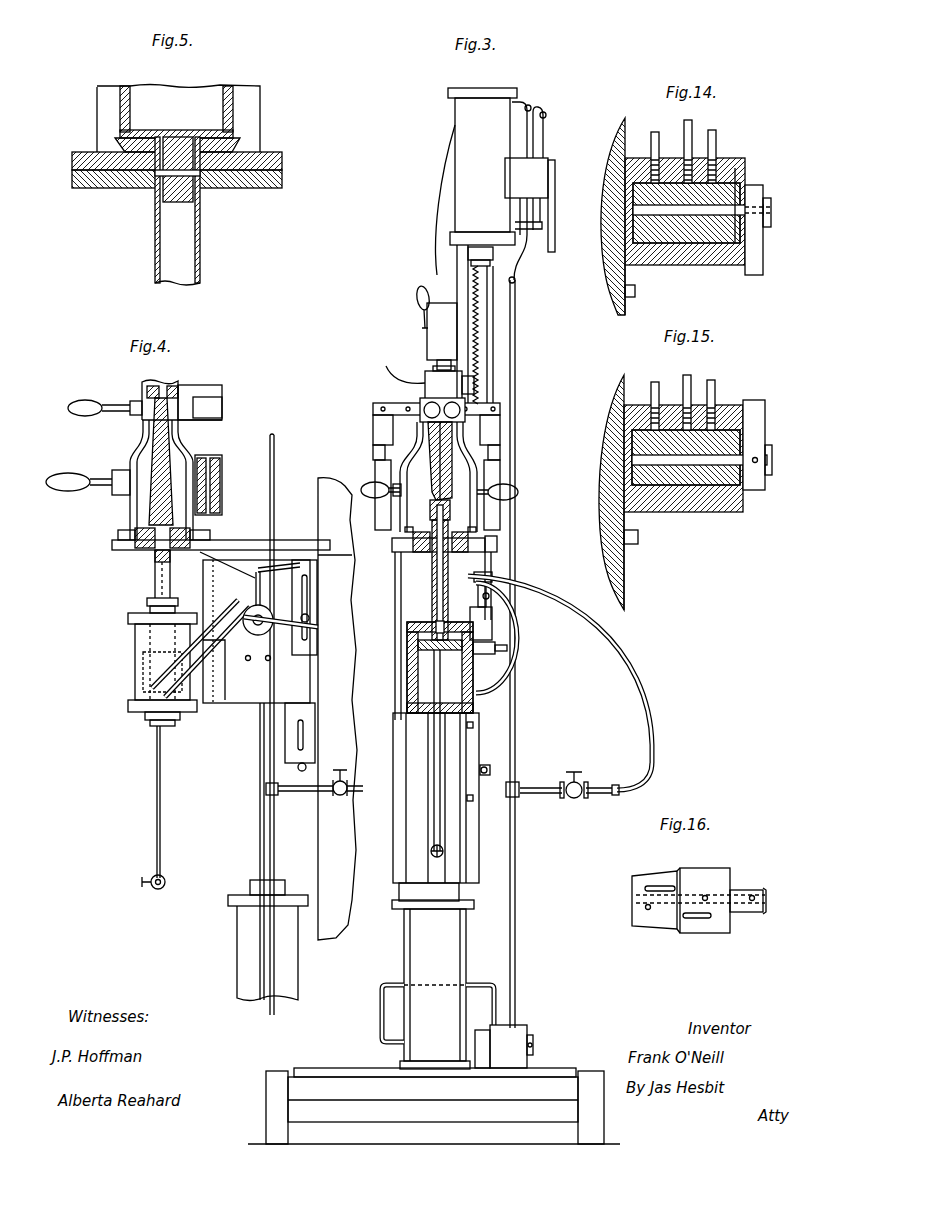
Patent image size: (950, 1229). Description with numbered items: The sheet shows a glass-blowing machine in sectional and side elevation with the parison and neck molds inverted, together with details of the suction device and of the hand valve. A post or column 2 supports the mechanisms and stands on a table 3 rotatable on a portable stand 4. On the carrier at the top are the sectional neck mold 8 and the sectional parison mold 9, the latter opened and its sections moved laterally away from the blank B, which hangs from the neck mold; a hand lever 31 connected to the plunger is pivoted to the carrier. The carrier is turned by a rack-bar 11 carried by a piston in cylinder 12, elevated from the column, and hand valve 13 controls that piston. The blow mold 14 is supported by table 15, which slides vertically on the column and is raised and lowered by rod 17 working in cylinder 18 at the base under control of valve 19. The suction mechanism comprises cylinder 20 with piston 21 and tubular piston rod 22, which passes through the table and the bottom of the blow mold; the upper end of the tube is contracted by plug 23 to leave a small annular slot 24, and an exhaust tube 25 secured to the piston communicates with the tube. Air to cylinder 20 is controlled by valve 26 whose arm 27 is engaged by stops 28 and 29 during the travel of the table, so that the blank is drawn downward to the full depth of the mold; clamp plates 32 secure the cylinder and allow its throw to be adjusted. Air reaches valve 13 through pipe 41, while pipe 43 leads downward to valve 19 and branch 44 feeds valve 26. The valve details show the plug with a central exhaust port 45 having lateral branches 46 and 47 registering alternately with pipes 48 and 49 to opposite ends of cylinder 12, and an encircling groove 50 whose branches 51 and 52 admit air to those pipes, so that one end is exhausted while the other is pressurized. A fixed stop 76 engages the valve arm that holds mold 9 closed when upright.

In FIG. 3, the post or column 2 is at (345, 710).
In FIG. 3, the table 3 is at (335, 1068).
In FIG. 3, the portable stand 4 is at (434, 1107).
In FIG. 4, the sectional neck mold 8 is at (136, 400).
In FIG. 3, the sectional neck mold 8 is at (435, 405).
In FIG. 3, the sectional blank or parison mold 9 is at (376, 508).
In FIG. 3, the rack-bar 11 is at (480, 332).
In FIG. 3, the cylinder 12 is at (457, 108).
In FIG. 3, the hand valve 13 is at (548, 178).
In FIG. 16, the hand valve 13 is at (632, 915).
In FIG. 5, the blow mold 14 is at (250, 107).
In FIG. 4, the blow mold 14 is at (133, 510).
In FIG. 3, the blow mold 14 is at (412, 540).
In FIG. 3, the table 15 is at (488, 548).
In FIG. 14, the table 15 is at (748, 190).
In FIG. 4, the rod 17 is at (260, 832).
In FIG. 3, the rod 17 is at (430, 828).
In FIG. 4, the cylinder 18 is at (237, 953).
In FIG. 3, the cylinder 18 is at (438, 976).
In FIG. 3, the valve 19 is at (520, 1031).
In FIG. 4, the cylinder 20 is at (135, 652).
In FIG. 3, the cylinder 20 is at (408, 682).
In FIG. 4, the piston 21 is at (145, 672).
In FIG. 3, the piston 21 is at (418, 645).
In FIG. 5, the tubular piston rod 22 is at (156, 250).
In FIG. 4, the tubular piston rod 22 is at (155, 584).
In FIG. 3, the tubular piston rod 22 is at (432, 600).
In FIG. 5, the plug 23 is at (160, 201).
In FIG. 5, the annular slot 24 is at (168, 137).
In FIG. 4, the suction or exhaust tube 25 is at (155, 798).
In FIG. 3, the suction or exhaust tube 25 is at (433, 748).
In FIG. 4, the valve 26 is at (250, 629).
In FIG. 3, the valve 26 is at (492, 612).
In FIG. 4, the arm 27 is at (318, 632).
In FIG. 3, the arm 27 is at (495, 655).
In FIG. 4, the stop 28 is at (306, 764).
In FIG. 3, the stop 28 is at (490, 768).
In FIG. 4, the stop 29 is at (309, 618).
In FIG. 3, the hand lever 31 is at (418, 302).
In FIG. 4, the clamp plates 32 is at (213, 683).
In FIG. 14, the pipe 41 is at (687, 128).
In FIG. 15, the pipe 41 is at (687, 382).
In FIG. 4, the pipe 43 is at (270, 462).
In FIG. 3, the pipe 43 is at (517, 372).
In FIG. 3, the branch 44 is at (603, 797).
In FIG. 14, the central exhaust port 45 is at (726, 262).
In FIG. 15, the lateral branch 46 is at (628, 445).
In FIG. 14, the lateral branch 47 is at (736, 178).
In FIG. 14, the pipe 48 is at (652, 142).
In FIG. 15, the pipe 48 is at (652, 388).
In FIG. 14, the pipe 49 is at (714, 142).
In FIG. 15, the pipe 49 is at (712, 386).
In FIG. 14, the groove 50 is at (678, 262).
In FIG. 14, the lateral branch 51 is at (628, 205).
In FIG. 15, the lateral branch 52 is at (748, 403).
In FIG. 3, the fixed stop 76 is at (401, 365).
In FIG. 4, the blank B is at (153, 457).
In FIG. 3, the blank B is at (428, 468).